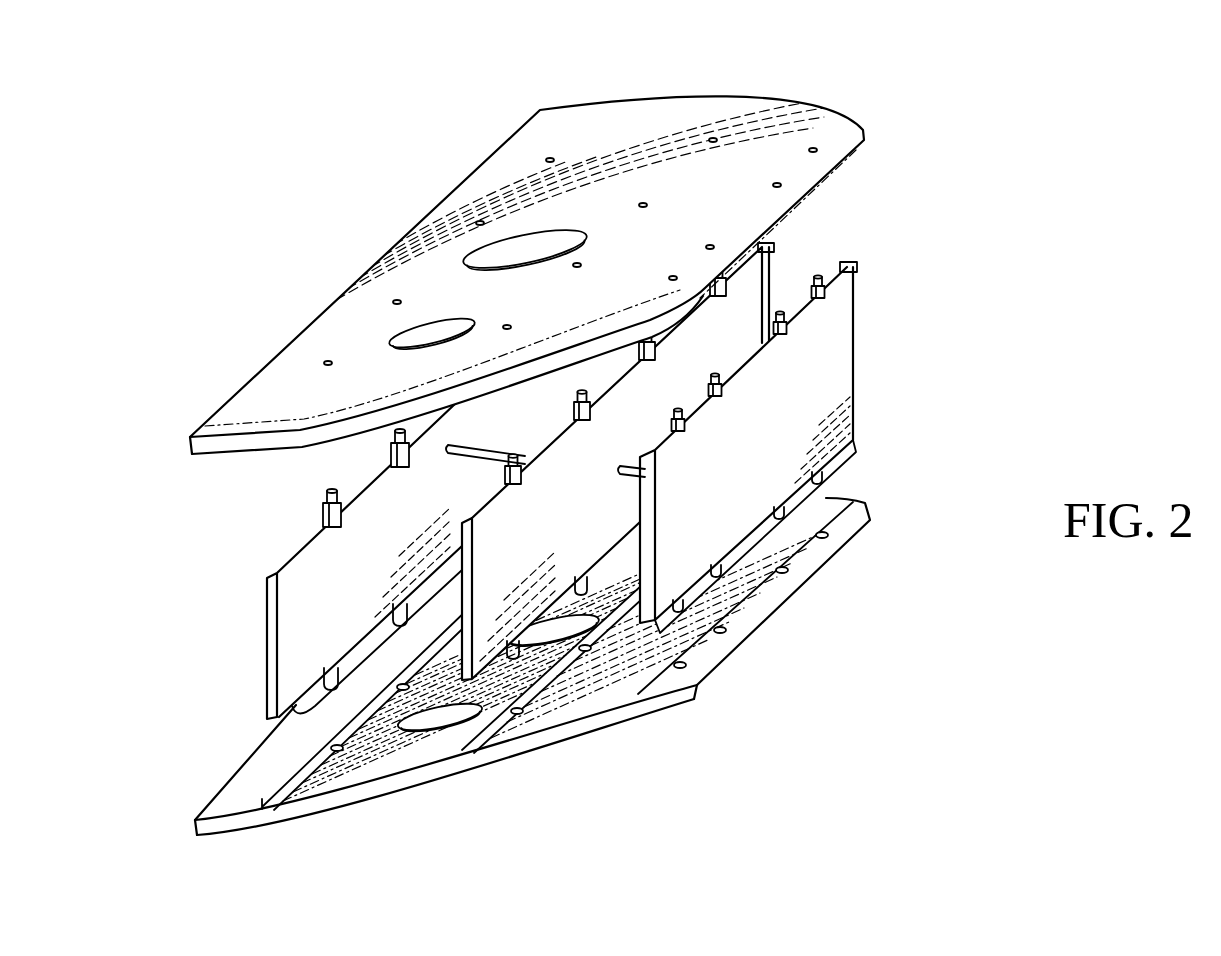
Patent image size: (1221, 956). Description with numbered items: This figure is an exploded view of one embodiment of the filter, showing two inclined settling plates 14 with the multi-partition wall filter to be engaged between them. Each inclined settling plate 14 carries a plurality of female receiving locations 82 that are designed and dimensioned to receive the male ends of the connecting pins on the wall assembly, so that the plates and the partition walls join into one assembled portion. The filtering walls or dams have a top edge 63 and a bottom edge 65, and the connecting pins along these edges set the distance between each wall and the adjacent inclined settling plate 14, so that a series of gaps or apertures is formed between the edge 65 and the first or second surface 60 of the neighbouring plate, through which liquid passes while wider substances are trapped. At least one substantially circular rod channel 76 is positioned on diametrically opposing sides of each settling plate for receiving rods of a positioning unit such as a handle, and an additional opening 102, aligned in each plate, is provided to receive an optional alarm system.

The inclined settling plate 14 is at (840, 127).
The first or second surface 60 is at (638, 693).
The top edge 63 is at (856, 266).
The bottom edge 65 is at (293, 714).
The rod channel 76 is at (538, 252).
The female receiving location 82 is at (827, 520).
The additional opening 102 is at (435, 332).